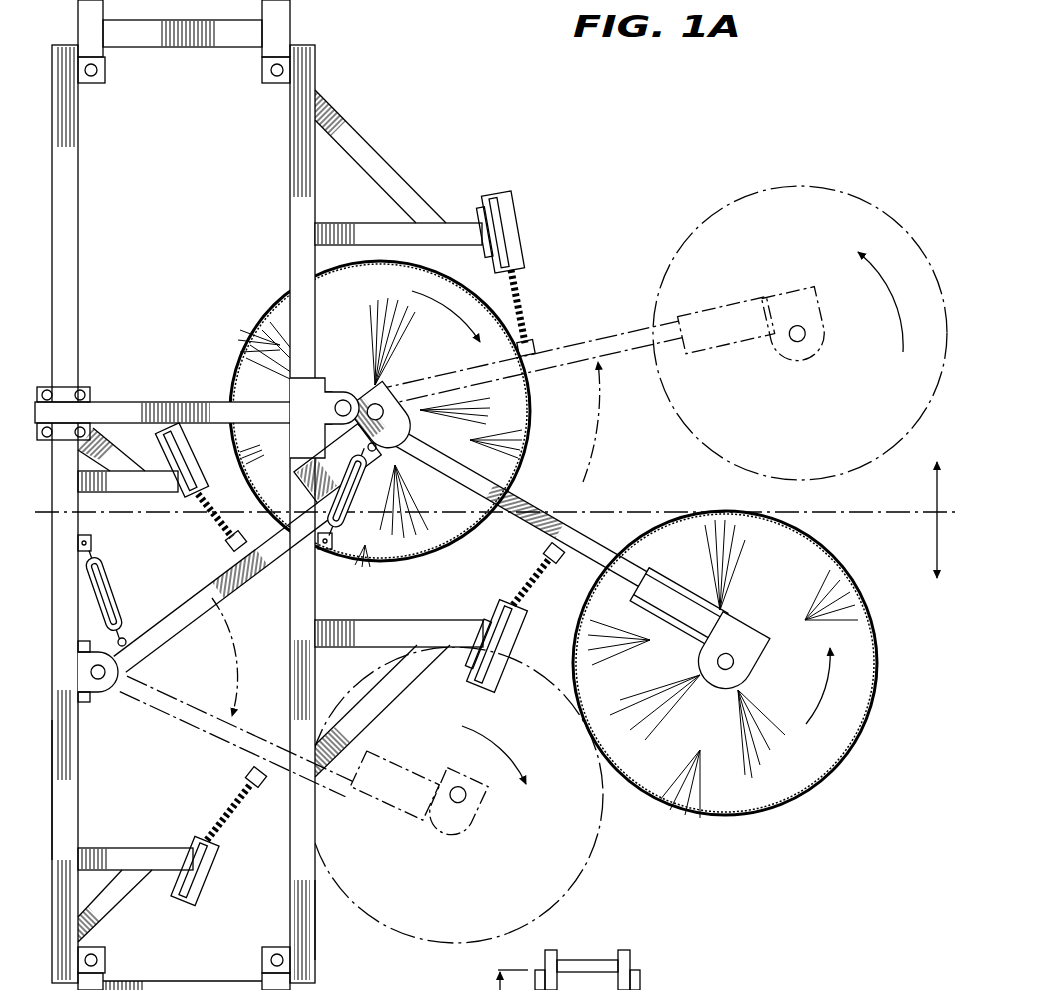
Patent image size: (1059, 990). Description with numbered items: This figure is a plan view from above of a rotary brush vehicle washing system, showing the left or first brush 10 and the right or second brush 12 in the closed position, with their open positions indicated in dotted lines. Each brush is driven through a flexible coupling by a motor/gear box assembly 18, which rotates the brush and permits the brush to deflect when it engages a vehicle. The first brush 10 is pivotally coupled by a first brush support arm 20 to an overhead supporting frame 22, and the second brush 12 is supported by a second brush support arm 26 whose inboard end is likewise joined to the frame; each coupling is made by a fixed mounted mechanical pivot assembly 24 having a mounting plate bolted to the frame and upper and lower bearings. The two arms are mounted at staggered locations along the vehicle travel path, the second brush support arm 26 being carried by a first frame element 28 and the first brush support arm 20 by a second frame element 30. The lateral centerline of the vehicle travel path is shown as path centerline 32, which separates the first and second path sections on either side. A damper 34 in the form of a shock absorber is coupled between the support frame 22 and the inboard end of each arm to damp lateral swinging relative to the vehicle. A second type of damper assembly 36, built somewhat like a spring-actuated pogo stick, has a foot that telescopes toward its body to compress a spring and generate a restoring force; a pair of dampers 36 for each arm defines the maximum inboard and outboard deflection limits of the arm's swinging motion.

The first brush 10 is at (735, 270).
The second brush 12 is at (349, 336).
The motor/gear box assembly 18 is at (730, 338).
The first brush support arm 20 is at (612, 340).
The supporting frame 22 is at (298, 252).
The pivot assembly 24 is at (346, 397).
The second brush support arm 26 is at (194, 584).
The first frame element 28 is at (76, 790).
The second frame element 30 is at (294, 916).
The path centerline 32 is at (614, 510).
The damper 34 is at (352, 504).
The damper assembly 36 is at (523, 228).